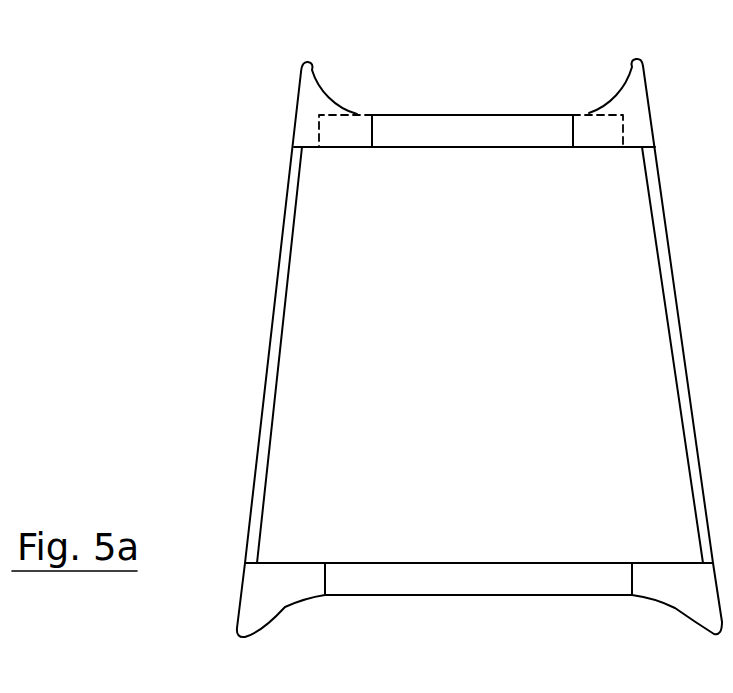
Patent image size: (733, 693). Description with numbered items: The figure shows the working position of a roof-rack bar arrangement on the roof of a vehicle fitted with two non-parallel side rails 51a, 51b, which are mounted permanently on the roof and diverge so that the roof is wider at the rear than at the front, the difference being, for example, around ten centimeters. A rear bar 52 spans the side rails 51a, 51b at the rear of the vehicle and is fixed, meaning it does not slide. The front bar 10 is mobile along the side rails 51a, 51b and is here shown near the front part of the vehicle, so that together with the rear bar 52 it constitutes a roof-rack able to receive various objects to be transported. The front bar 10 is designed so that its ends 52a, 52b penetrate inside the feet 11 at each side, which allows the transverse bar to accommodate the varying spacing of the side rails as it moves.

The front bar 10 is at (426, 137).
The feet 11 is at (305, 129).
The side rail 51a is at (280, 363).
The side rail 51b is at (690, 451).
The rear bar 52 is at (481, 577).
The end of the transverse bar 52a is at (349, 128).
The end of the transverse bar 52b is at (597, 125).